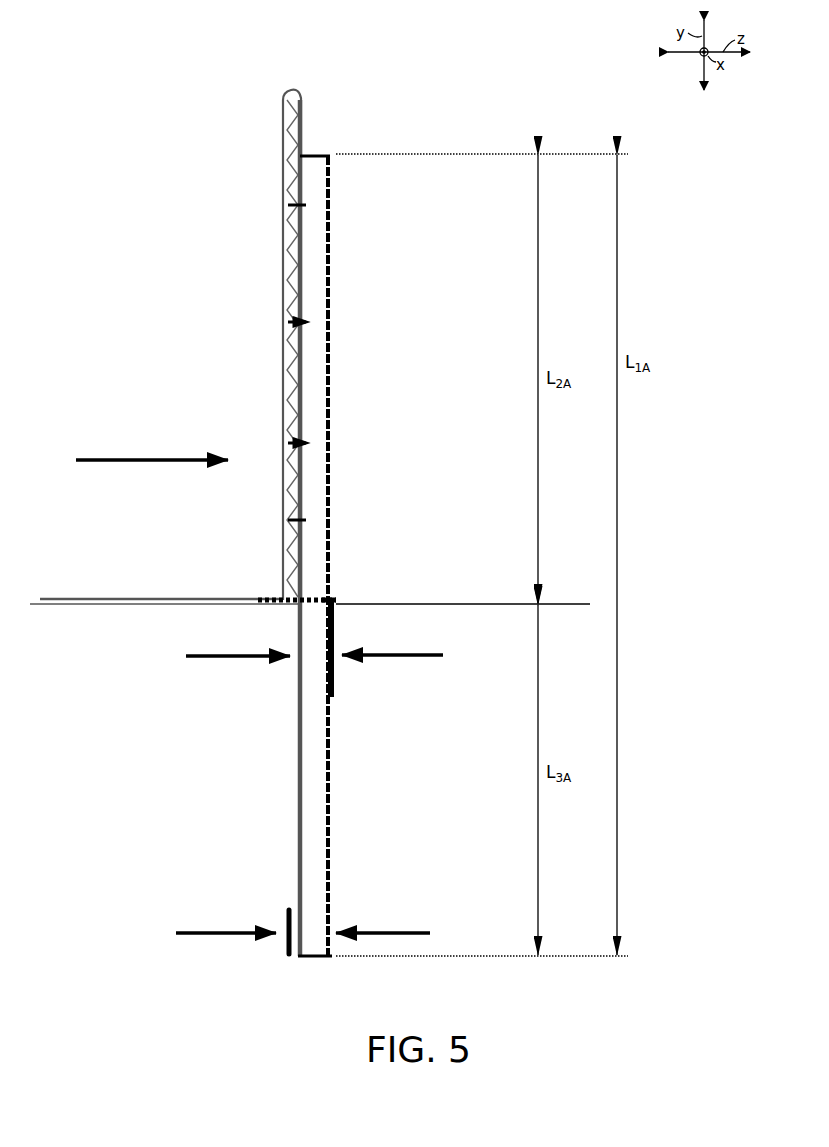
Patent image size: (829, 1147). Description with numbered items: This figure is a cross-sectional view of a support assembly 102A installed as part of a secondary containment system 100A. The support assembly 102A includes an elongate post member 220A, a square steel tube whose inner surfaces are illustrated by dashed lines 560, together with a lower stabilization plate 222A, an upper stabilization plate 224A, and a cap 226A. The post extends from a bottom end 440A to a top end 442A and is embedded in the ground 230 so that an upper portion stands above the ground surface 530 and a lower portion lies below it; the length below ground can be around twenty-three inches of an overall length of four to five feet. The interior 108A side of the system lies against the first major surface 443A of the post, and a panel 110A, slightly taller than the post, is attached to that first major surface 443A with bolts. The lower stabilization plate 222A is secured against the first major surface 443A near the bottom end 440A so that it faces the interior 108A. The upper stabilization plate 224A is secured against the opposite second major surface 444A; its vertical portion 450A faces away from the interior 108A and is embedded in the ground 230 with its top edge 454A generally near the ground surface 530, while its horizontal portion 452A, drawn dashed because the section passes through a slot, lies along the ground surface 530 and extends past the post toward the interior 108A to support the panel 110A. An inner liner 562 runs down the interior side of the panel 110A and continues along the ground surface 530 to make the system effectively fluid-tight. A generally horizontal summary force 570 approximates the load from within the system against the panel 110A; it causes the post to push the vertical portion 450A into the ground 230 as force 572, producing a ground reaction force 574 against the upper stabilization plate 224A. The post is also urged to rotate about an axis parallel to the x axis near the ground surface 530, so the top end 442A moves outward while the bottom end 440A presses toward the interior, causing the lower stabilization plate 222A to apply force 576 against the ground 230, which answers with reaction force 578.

The secondary containment system 100A is at (159, 76).
The support assembly 102A is at (384, 254).
The interior 108A is at (98, 336).
The panel 110A is at (283, 165).
The elongate post member 220A is at (317, 354).
The lower stabilization plate 222A is at (288, 912).
The upper stabilization plate 224A is at (336, 648).
The cap 226A is at (310, 150).
The ground 230 is at (113, 790).
The bottom end 440A is at (327, 960).
The top end 442A is at (328, 151).
The first major surface 443A is at (298, 840).
The second major surface 444A is at (330, 838).
The vertical portion 450A is at (336, 694).
The horizontal portion 452A is at (270, 606).
The top edge 454A is at (332, 596).
The ground surface 530 is at (416, 604).
The dashed lines 560 is at (307, 960).
The inner liner 562 is at (283, 180).
The summary force 570 is at (151, 443).
The force 572 is at (187, 658).
The reaction force 574 is at (447, 658).
The force 576 is at (430, 933).
The reaction force 578 is at (176, 933).